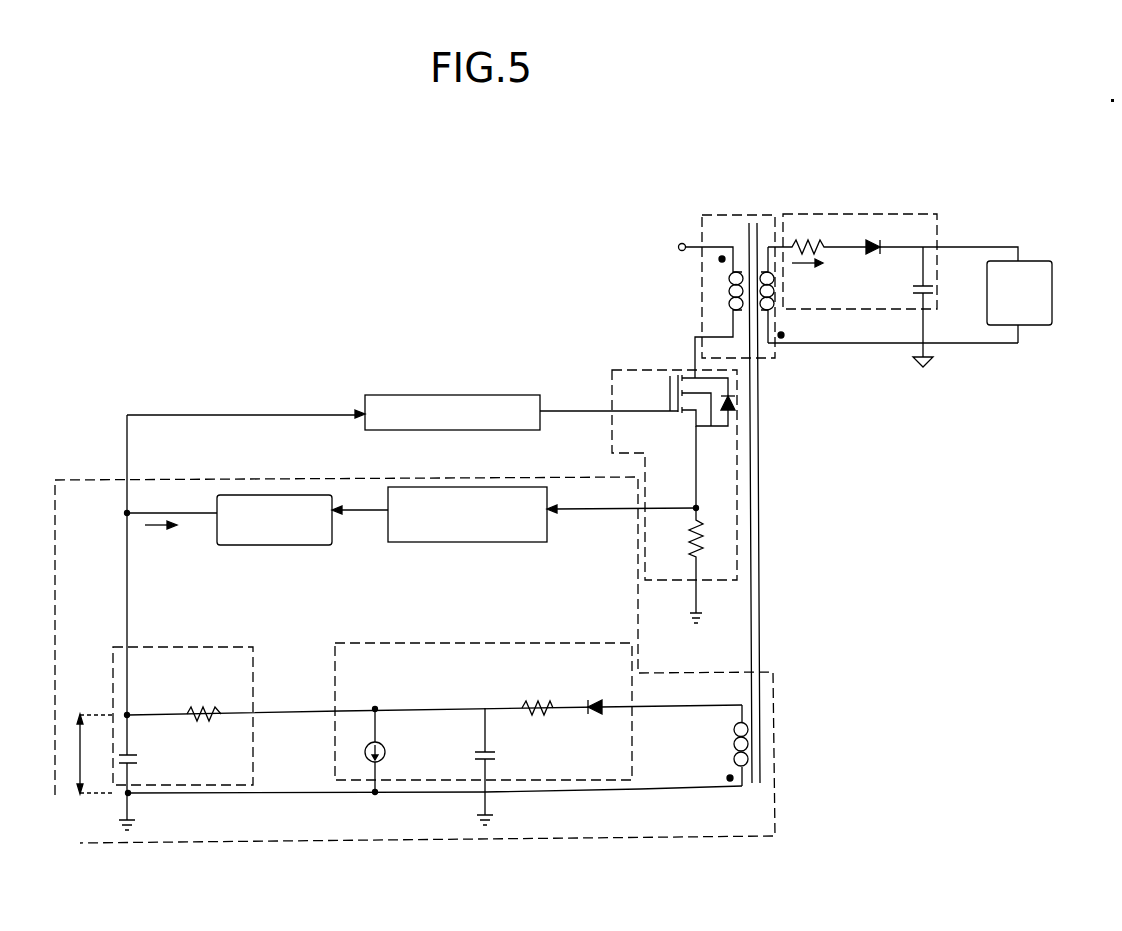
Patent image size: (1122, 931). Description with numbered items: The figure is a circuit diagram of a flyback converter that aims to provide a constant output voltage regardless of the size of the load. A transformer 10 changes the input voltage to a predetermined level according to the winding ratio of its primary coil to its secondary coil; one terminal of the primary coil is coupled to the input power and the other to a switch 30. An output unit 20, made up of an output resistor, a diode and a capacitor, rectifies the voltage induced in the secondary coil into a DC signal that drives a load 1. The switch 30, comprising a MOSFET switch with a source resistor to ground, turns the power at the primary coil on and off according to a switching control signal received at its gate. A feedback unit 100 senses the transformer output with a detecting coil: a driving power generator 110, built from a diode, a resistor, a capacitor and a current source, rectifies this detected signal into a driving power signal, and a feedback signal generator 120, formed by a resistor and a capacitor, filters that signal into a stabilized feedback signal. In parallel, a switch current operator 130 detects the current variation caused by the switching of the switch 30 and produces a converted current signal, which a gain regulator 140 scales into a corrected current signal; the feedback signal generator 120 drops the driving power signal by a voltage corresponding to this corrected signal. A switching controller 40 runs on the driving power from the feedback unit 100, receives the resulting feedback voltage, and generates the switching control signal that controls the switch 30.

The load 1 is at (1030, 258).
The transformer 10 is at (714, 213).
The output unit 20 is at (856, 212).
The switch 30 is at (636, 368).
The switching controller 40 is at (397, 393).
The feedback unit 100 is at (775, 692).
The driving power generator 110 is at (508, 640).
The feedback signal generator 120 is at (220, 645).
The switch current operator 130 is at (474, 546).
The gain regulator 140 is at (237, 550).